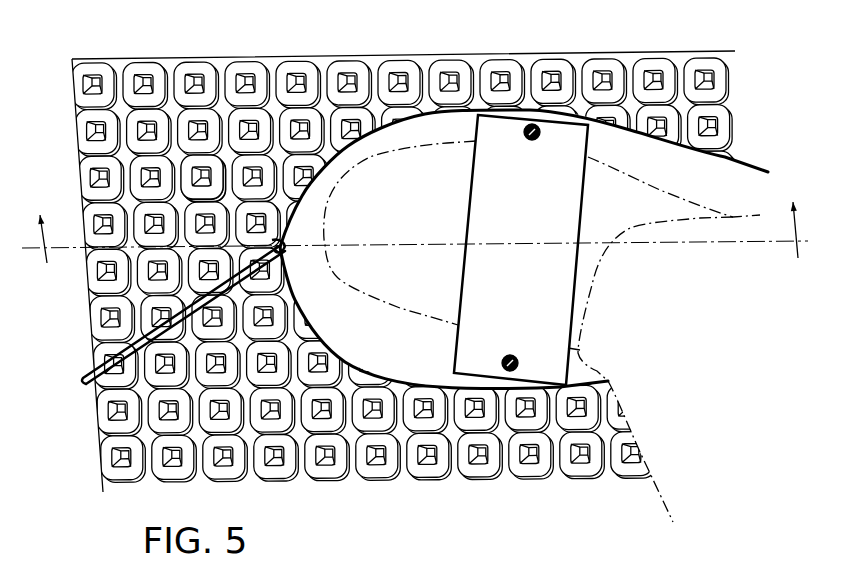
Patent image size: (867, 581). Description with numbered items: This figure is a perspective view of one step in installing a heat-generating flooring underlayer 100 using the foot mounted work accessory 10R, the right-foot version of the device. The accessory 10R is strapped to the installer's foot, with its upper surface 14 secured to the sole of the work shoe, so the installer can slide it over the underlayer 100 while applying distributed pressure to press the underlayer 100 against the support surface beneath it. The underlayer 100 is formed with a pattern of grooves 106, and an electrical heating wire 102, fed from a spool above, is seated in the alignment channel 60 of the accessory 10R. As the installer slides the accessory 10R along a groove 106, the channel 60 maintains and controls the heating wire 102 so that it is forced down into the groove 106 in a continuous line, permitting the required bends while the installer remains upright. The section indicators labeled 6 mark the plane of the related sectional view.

The flooring underlayer 100 is at (727, 50).
The grooves 106 is at (205, 200).
The foot mounted work accessory 10R is at (448, 133).
The upper surface 14 is at (396, 355).
The section line 6- 6 is at (415, 250).
The electrical heating wire 102 is at (84, 386).
The alignment channel 60 is at (272, 240).